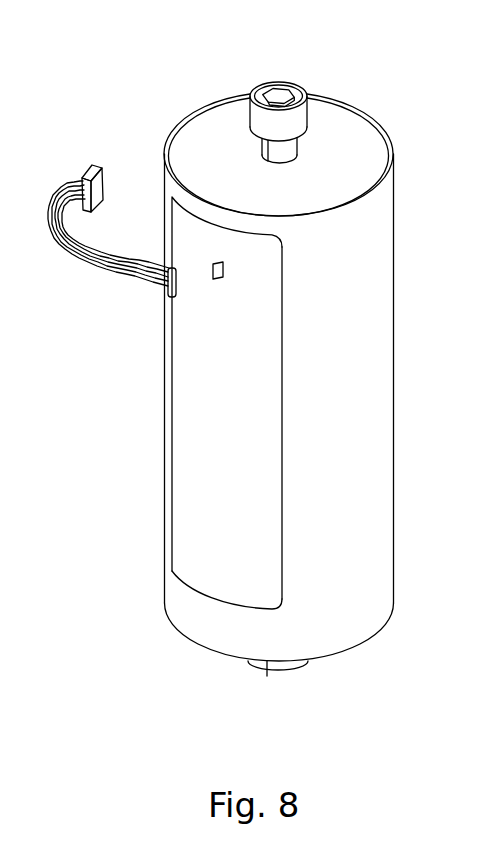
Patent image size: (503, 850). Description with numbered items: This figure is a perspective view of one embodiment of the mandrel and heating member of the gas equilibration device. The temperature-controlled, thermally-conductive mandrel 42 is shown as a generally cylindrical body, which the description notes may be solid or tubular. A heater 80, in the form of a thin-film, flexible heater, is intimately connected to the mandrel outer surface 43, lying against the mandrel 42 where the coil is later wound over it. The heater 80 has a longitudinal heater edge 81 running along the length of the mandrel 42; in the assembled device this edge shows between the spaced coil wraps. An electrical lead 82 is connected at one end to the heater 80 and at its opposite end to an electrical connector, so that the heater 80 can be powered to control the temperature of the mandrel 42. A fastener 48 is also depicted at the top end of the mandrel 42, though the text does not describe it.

The mandrel 42 is at (347, 551).
The mandrel outer surface 43 is at (373, 415).
The socket head screw 48 is at (288, 78).
The heater 80 is at (223, 457).
The longitudinal heater edge 81 is at (281, 390).
The electrical lead 82 is at (83, 263).